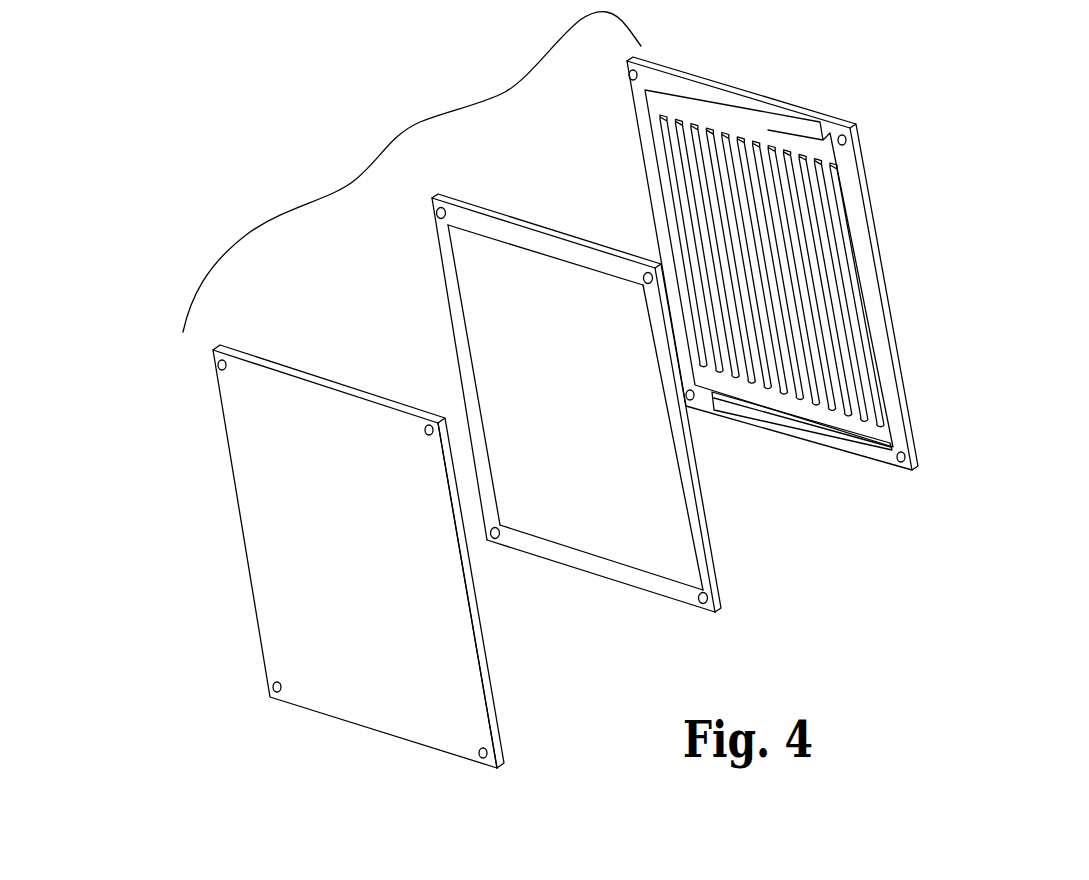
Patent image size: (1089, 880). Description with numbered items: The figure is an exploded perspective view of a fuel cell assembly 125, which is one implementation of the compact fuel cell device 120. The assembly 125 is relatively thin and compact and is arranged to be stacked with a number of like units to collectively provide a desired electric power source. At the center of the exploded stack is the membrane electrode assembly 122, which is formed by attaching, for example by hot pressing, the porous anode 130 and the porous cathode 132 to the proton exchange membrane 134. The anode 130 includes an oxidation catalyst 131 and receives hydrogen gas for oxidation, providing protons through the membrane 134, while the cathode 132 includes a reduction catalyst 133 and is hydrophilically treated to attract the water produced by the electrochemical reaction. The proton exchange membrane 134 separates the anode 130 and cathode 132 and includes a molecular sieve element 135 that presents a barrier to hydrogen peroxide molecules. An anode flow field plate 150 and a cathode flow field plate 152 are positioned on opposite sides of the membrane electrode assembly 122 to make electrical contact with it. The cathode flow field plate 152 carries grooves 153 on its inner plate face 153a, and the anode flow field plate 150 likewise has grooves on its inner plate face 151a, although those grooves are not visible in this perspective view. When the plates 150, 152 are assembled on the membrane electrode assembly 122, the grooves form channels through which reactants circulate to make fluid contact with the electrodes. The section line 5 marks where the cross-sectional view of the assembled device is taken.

The fuel cell device 120 is at (291, 143).
The fuel cell assembly 125 is at (957, 96).
The section line 5- 5 is at (632, 130).
The membrane electrode assembly 122 is at (470, 336).
The porous anode 130 is at (565, 420).
The oxidation catalyst 131 is at (614, 550).
The porous cathode 132 is at (626, 490).
The reduction catalyst 133 is at (680, 560).
The proton exchange membrane 134 is at (478, 291).
The molecular sieve element 135 is at (505, 262).
The anode flow field plate 150 is at (270, 538).
The inner plate face 151a is at (500, 716).
The cathode flow field plate 152 is at (880, 331).
The grooves 153 is at (783, 152).
The inner plate face 153a is at (798, 430).